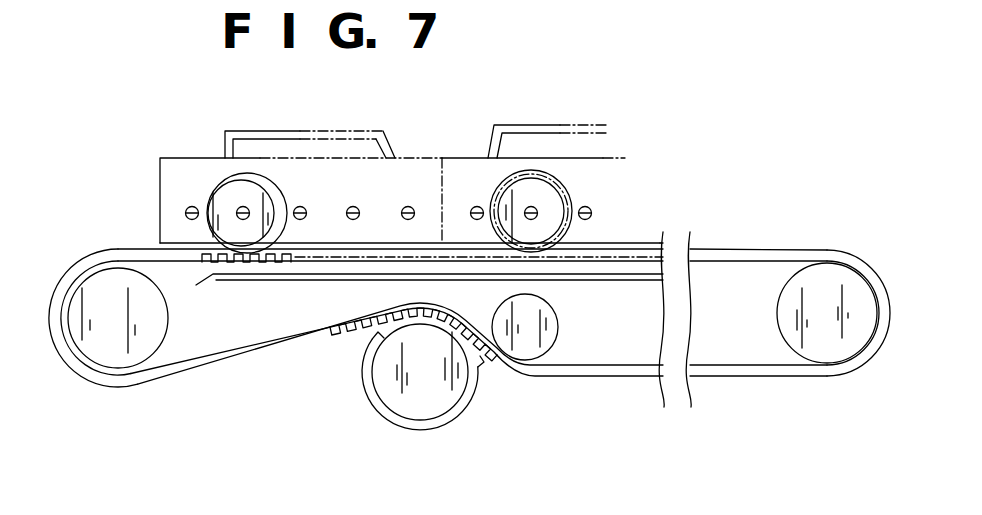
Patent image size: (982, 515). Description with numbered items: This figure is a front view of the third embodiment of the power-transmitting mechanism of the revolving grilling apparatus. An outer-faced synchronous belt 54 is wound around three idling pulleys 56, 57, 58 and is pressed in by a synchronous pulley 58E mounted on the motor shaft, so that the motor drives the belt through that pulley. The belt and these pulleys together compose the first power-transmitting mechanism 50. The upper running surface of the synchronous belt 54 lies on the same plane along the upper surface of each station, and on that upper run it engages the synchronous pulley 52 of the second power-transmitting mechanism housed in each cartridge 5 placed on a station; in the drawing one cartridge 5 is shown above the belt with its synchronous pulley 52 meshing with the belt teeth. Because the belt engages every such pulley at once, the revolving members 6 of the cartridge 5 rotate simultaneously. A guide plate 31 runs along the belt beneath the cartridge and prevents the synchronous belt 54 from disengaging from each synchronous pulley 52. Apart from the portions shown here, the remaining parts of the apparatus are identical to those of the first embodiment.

The cartridge 5 is at (390, 183).
The revolving members 6 is at (185, 218).
The synchronous pulley 52 is at (222, 190).
The outer-faced synchronous belt 54 is at (150, 250).
The guide plate 31 is at (267, 275).
The idling pulley 56 is at (120, 347).
The idling pulley 57 is at (832, 342).
The idling pulley 58 is at (530, 348).
The synchronous pulley 58E is at (412, 397).
The first power-transmitting mechanism 50 is at (617, 388).